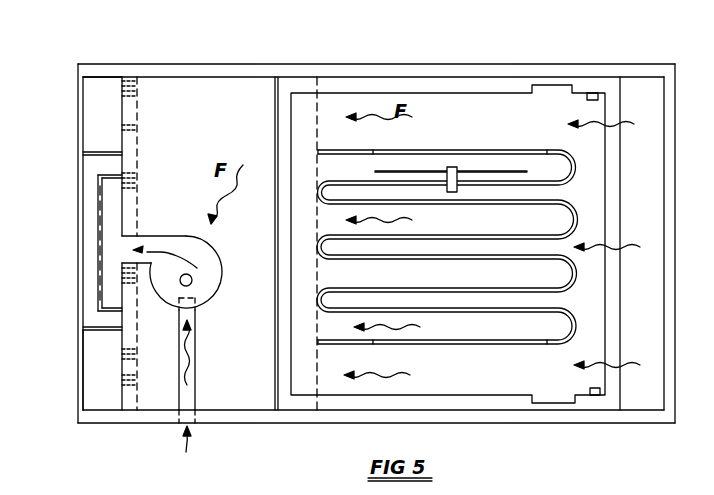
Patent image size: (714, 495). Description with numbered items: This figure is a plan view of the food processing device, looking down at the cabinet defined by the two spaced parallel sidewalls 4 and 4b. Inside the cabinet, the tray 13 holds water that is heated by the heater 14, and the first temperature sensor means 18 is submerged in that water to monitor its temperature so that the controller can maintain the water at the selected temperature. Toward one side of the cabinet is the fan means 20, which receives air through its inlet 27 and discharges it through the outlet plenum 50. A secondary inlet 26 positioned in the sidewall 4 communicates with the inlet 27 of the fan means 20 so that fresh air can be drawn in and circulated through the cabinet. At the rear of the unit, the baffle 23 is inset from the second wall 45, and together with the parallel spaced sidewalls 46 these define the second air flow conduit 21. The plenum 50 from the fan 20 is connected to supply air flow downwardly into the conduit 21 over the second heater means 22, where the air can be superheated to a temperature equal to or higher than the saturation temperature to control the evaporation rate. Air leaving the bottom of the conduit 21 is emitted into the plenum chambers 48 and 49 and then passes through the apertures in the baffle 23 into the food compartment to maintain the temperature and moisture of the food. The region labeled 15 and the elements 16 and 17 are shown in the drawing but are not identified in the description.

The sidewall 4 is at (355, 243).
The sidewall 4b is at (591, 72).
The tray 13 is at (612, 188).
The heater 14 is at (571, 278).
The blower compartment 15 is at (232, 116).
The support bracket 16 is at (599, 102).
The mounting flange 17 is at (545, 86).
The first temperature sensor means 18 is at (485, 172).
The fan means 20 is at (190, 263).
The second air flow conduit 21 is at (90, 241).
The second heater means 22 is at (98, 267).
The baffle 23 is at (137, 153).
The secondary inlet 26 is at (192, 396).
The inlet 27 is at (190, 278).
The second wall 45 is at (84, 373).
The sidewalls 46 is at (94, 153).
The plenum chamber 48 is at (90, 410).
The plenum chamber 49 is at (95, 103).
The outlet plenum 50 is at (147, 238).